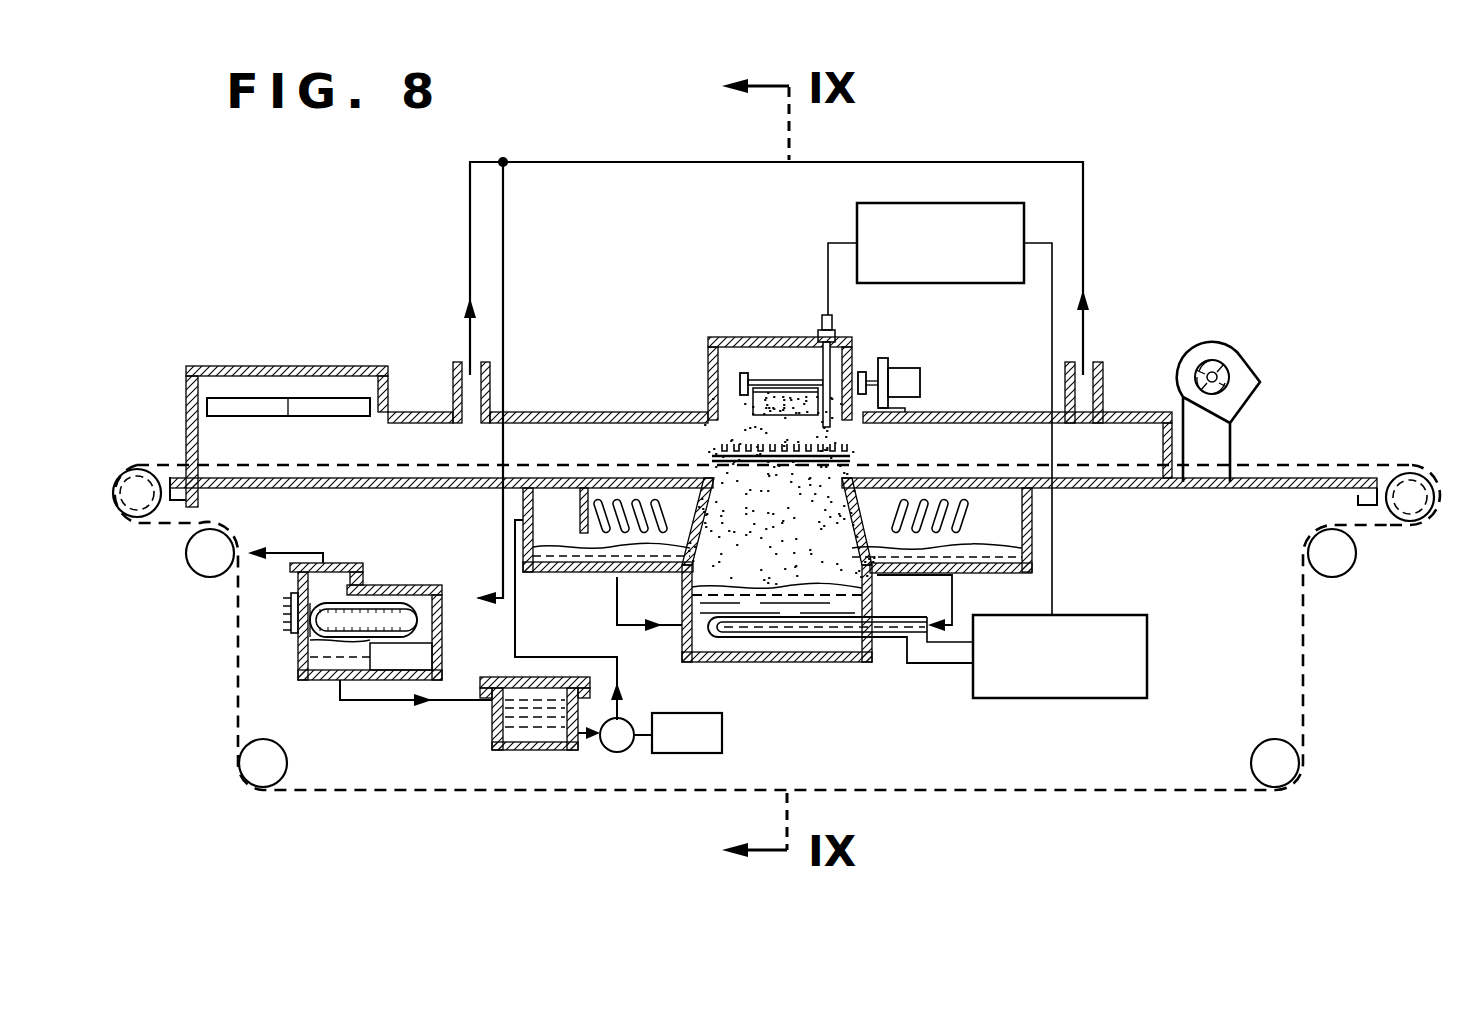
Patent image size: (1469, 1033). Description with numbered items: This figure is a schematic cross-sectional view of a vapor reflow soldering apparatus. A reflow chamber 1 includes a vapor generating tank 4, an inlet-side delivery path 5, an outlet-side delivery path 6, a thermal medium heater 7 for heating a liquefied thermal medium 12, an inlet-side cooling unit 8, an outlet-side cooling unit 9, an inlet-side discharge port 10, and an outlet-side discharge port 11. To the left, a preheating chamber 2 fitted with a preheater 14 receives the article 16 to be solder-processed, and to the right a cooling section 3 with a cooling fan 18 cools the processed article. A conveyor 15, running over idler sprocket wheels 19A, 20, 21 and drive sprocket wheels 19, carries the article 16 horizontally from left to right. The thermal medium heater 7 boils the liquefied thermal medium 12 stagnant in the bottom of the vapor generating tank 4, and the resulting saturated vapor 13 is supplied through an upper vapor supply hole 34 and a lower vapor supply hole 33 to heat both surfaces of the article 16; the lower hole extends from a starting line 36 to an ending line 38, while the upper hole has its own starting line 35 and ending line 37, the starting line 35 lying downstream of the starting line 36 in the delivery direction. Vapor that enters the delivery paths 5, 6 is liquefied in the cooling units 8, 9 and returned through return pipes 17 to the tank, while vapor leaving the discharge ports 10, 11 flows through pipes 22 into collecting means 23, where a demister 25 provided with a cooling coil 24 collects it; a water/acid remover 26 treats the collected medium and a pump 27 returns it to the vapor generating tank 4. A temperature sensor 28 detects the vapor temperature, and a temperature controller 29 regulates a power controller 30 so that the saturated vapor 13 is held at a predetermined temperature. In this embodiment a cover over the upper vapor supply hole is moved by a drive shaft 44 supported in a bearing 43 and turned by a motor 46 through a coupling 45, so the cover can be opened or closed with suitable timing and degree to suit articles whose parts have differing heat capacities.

The reflow chamber 1 is at (838, 312).
The preheating chamber 2 is at (355, 366).
The cooling section 3 is at (1285, 465).
The vapor generating tank 4 is at (708, 372).
The inlet-side delivery path 5 is at (545, 412).
The outlet-side delivery path 6 is at (945, 412).
The thermal medium heater 7 is at (888, 640).
The inlet-side cooling unit 8 is at (620, 532).
The outlet-side cooling unit 9 is at (942, 530).
The inlet-side discharge port 10 is at (455, 380).
The outlet-side discharge port 11 is at (1103, 372).
The liquefied thermal medium 12 is at (773, 662).
The saturated vapor 13 is at (935, 458).
The preheater 14 is at (318, 398).
The conveyor 15 is at (1327, 465).
The article 16 is at (720, 448).
The return pipes 17 is at (952, 592).
The cooling fan 18 is at (1207, 345).
The drive sprocket wheels 19 is at (1265, 752).
The idler sprocket wheel 19A is at (729, 782).
The idler sprocket wheel 20 is at (137, 517).
The idler sprocket wheel 21 is at (1410, 515).
The pipes 22 is at (505, 243).
The collecting means 23 is at (393, 680).
The cooling coil 24 is at (400, 585).
The demister 25 is at (290, 592).
The water/acid remover 26 is at (492, 720).
The pump 27 is at (612, 752).
The temperature sensor 28 is at (822, 370).
The temperature controller 29 is at (995, 203).
The power controller 30 is at (1147, 638).
The lower vapor supply hole 33 is at (738, 482).
The upper vapor supply hole 34 is at (740, 392).
The starting line 35 is at (768, 385).
The starting line 36 is at (713, 495).
The ending line 37 is at (862, 428).
The ending line 38 is at (838, 487).
The bearing 43 is at (752, 378).
The drive shaft 44 is at (866, 382).
The coupling 45 is at (883, 372).
The motor 46 is at (907, 373).